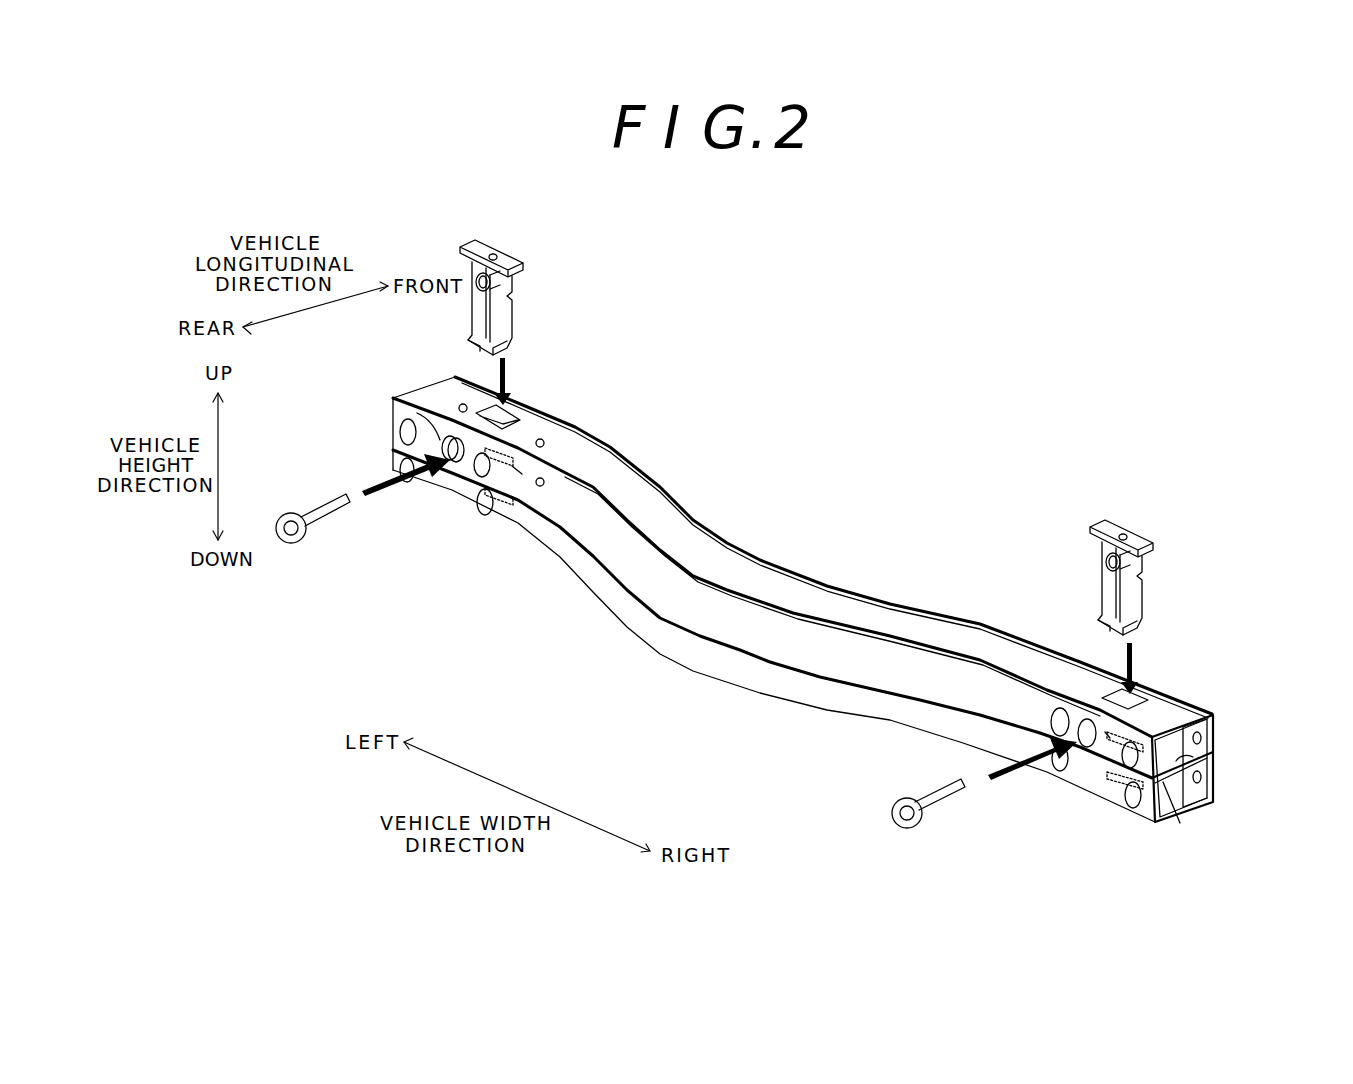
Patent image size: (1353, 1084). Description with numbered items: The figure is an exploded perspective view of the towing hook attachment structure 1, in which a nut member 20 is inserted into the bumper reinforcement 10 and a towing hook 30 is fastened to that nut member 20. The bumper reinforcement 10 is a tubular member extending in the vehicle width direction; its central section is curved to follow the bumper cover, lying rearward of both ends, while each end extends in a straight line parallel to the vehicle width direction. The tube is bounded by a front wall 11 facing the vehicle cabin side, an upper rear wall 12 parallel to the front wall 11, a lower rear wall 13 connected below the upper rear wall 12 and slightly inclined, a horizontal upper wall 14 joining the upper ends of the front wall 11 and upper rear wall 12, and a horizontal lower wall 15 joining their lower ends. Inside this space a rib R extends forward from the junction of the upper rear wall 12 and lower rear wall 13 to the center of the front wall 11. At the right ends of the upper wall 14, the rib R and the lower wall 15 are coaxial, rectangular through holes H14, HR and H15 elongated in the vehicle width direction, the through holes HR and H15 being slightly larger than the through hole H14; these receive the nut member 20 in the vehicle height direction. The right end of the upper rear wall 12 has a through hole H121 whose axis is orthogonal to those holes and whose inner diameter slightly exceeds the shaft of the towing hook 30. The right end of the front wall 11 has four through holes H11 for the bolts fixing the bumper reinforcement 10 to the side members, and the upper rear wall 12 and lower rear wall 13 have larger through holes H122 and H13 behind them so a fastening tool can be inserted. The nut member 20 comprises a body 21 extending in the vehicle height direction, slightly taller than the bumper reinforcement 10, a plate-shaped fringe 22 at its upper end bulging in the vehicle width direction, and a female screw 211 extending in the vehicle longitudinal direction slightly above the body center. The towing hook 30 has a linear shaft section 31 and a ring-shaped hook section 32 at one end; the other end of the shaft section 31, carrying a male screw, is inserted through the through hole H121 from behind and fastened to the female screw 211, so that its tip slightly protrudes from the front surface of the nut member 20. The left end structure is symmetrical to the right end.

The towing hook attachment structure 1 is at (873, 415).
The bumper reinforcement 10 is at (690, 688).
The front wall 11 is at (1212, 733).
The upper rear wall 12 is at (775, 650).
The lower rear wall 13 is at (820, 690).
The upper wall 14 is at (730, 560).
The lower wall 15 is at (1173, 820).
The nut member 20 is at (556, 296).
The body 21 is at (505, 317).
The fringe 22 is at (482, 250).
The female screw 211 is at (478, 287).
The towing hook 30 is at (276, 515).
The shaft section 31 is at (333, 513).
The hook section 32 is at (280, 543).
The through hole H11 is at (833, 575).
The through hole H121 is at (697, 566).
The through hole H122 is at (775, 653).
The through hole H13 is at (723, 681).
The through hole H14 is at (843, 530).
The through hole H15 is at (814, 662).
The through hole HR is at (805, 599).
The rib R is at (1178, 761).